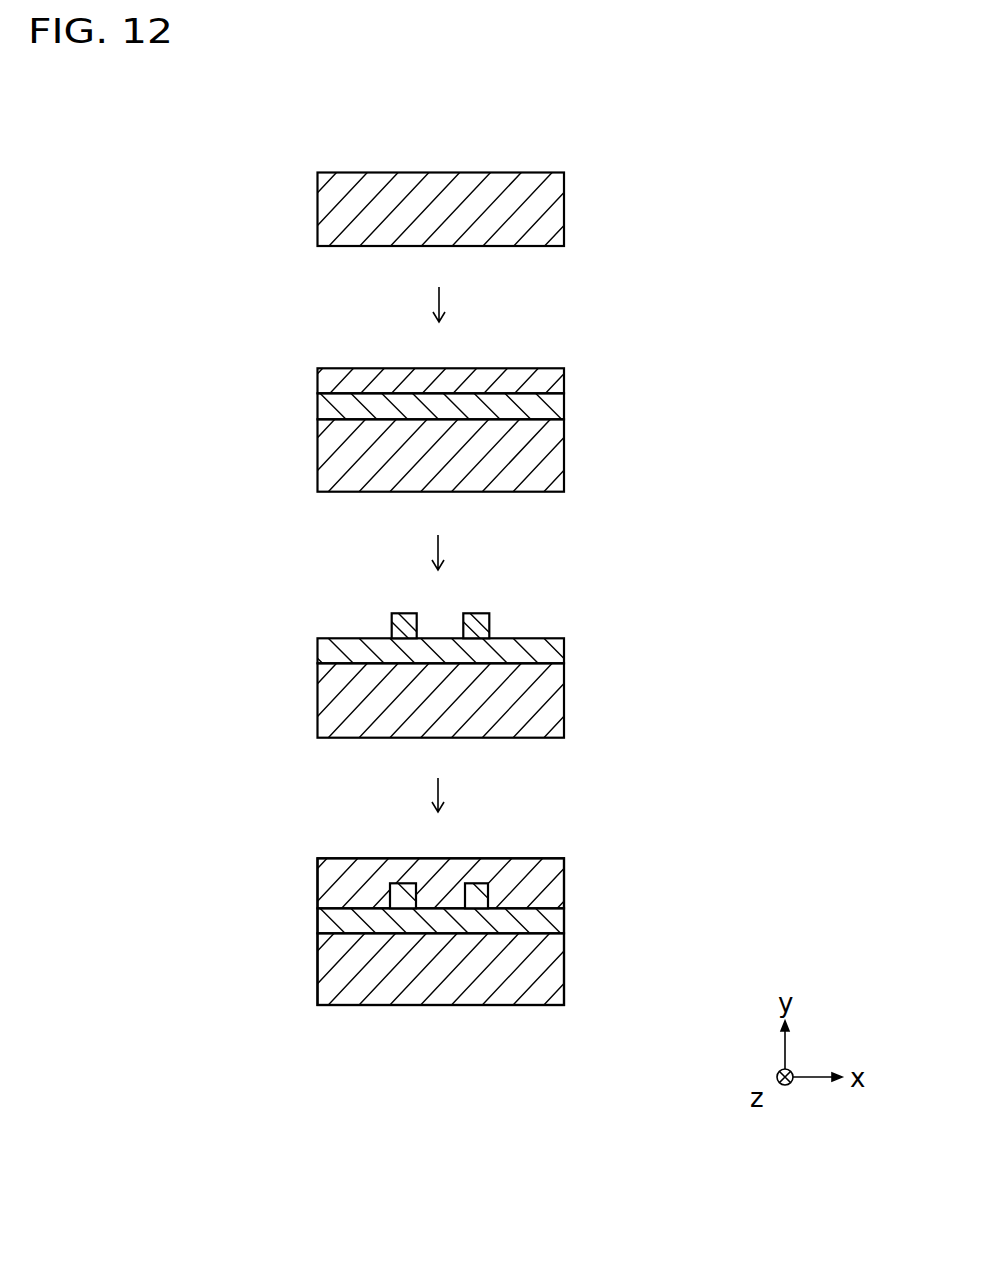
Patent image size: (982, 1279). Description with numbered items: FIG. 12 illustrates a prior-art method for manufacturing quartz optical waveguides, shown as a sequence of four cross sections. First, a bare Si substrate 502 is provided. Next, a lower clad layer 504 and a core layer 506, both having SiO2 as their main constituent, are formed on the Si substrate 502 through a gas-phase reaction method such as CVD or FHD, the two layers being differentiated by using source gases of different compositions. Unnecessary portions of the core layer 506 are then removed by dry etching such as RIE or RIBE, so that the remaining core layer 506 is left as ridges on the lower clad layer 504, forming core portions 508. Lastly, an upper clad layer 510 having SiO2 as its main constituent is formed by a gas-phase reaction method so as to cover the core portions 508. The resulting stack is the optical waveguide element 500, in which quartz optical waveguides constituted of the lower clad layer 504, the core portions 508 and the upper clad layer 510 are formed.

The optical waveguide element 500 is at (476, 1123).
The Si substrate 502 is at (552, 212).
The lower clad layer 504 is at (554, 405).
The core layer 506 is at (553, 380).
The core portions 508 is at (482, 628).
The upper clad layer 510 is at (547, 892).